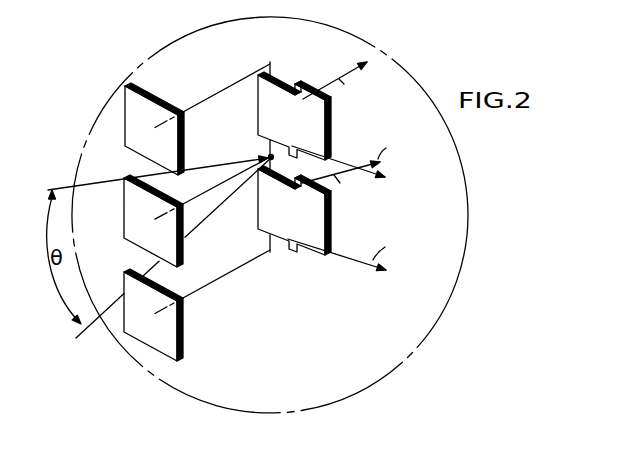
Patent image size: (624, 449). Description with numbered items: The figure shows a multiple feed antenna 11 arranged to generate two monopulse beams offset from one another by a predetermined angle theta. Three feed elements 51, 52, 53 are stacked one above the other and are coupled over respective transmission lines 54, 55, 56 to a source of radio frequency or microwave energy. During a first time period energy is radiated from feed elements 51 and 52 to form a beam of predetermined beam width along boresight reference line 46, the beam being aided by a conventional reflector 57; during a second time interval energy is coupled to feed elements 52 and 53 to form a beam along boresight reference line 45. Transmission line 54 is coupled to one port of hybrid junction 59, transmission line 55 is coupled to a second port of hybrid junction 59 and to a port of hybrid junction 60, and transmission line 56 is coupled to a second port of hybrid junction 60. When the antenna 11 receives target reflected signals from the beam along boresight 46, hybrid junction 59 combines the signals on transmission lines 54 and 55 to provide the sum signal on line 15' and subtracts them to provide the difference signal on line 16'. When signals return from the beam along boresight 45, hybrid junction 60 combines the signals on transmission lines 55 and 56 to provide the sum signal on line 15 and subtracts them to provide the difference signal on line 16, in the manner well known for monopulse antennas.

The antenna 11 is at (144, 41).
The reflector 57 is at (355, 17).
The feed element 51 is at (125, 136).
The feed element 52 is at (124, 215).
The feed element 53 is at (180, 361).
The transmission line 54 is at (219, 92).
The transmission line 55 is at (215, 189).
The transmission line 56 is at (208, 285).
The hybrid junction 59 is at (258, 115).
The hybrid junction 60 is at (258, 219).
The boresight reference line 46 is at (62, 188).
The boresight reference line 45 is at (84, 334).
The line 15 is at (357, 149).
The line 15' is at (345, 79).
The line 16 is at (354, 258).
The line 16' is at (341, 163).